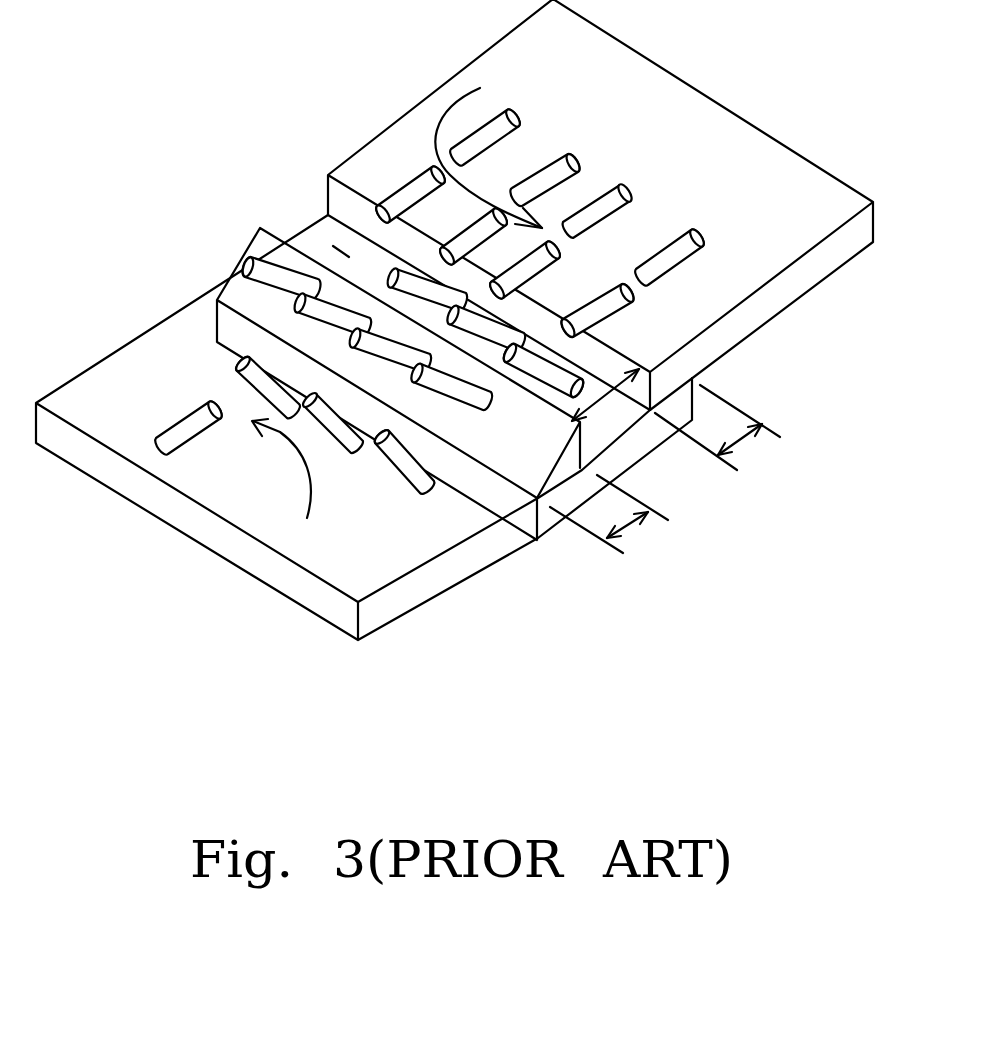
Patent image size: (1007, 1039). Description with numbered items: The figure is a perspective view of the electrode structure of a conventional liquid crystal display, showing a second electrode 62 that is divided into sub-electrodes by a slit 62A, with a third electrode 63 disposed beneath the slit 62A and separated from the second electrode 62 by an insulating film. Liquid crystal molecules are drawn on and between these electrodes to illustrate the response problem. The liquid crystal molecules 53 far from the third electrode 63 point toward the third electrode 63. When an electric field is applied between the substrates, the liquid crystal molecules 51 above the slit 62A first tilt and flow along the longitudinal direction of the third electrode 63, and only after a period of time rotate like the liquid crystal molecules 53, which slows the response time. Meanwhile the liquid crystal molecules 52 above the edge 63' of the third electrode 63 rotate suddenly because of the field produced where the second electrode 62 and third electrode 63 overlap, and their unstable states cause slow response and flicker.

The liquid crystal molecules 51 is at (352, 262).
The liquid crystal molecules 52 is at (247, 268).
The liquid crystal molecules 53 is at (167, 437).
The second electrode 62 is at (383, 547).
The slit 62A is at (600, 393).
The third electrode 63 is at (614, 261).
The edge of the third electrode 63' is at (674, 467).